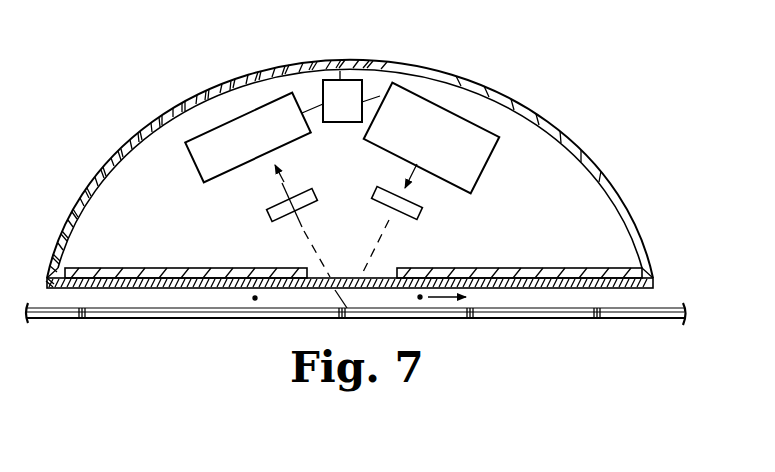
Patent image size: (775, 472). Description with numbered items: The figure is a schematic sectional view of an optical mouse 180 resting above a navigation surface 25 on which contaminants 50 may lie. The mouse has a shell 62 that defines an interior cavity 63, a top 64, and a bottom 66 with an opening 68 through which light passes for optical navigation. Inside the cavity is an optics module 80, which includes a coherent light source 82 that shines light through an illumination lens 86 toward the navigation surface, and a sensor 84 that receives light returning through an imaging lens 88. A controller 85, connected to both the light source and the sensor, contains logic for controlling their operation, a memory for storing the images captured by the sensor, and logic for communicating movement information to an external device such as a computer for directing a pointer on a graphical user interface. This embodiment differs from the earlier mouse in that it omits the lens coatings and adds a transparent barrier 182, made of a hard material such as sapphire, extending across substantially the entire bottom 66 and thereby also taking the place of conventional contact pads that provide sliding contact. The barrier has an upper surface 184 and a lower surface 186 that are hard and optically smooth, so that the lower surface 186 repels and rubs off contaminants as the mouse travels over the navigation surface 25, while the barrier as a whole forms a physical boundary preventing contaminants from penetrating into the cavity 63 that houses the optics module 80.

The navigation surface 25 is at (487, 308).
The contaminants 50 is at (255, 300).
The shell 62 is at (607, 177).
The cavity 63 is at (589, 230).
The top 64 is at (347, 71).
The bottom 66 is at (537, 277).
The opening 68 is at (390, 272).
The optics module 80 is at (188, 152).
The coherent light source 82 is at (490, 170).
The sensor 84 is at (203, 183).
The controller 85 is at (336, 79).
The illumination lens 86 is at (378, 190).
The imaging lens 88 is at (318, 198).
The optical mouse 180 is at (524, 102).
The transparent barrier 182 is at (632, 288).
The upper surface 184 is at (218, 268).
The lower surface 186 is at (138, 288).